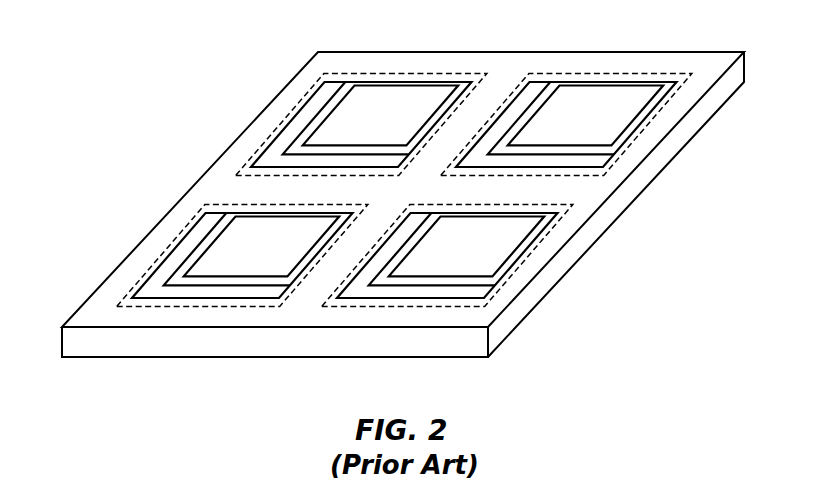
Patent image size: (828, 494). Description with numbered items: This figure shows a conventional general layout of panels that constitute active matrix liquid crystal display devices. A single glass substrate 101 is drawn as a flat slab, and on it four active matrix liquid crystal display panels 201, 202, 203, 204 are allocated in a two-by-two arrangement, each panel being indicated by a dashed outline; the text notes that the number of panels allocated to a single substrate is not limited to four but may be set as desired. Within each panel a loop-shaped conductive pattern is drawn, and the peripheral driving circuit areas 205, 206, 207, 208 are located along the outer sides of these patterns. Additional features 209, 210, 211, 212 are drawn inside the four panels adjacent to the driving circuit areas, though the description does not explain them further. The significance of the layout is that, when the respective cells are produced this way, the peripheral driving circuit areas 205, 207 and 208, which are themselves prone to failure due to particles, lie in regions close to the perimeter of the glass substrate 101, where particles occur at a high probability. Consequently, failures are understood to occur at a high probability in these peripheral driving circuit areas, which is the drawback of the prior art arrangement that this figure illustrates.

The glass substrate 101 is at (403, 184).
The active matrix liquid crystal display panel 201 is at (332, 125).
The active matrix liquid crystal display panel 202 is at (603, 125).
The active matrix liquid crystal display panel 203 is at (213, 256).
The active matrix liquid crystal display panel 204 is at (484, 256).
The peripheral driving circuit area 205 is at (339, 124).
The peripheral driving circuit area 206 is at (581, 150).
The peripheral driving circuit area 207 is at (220, 254).
The peripheral driving circuit area 208 is at (461, 281).
The first slit 209 is at (323, 100).
The second slit 210 is at (612, 132).
The third slit 211 is at (205, 230).
The fourth slit 212 is at (494, 263).